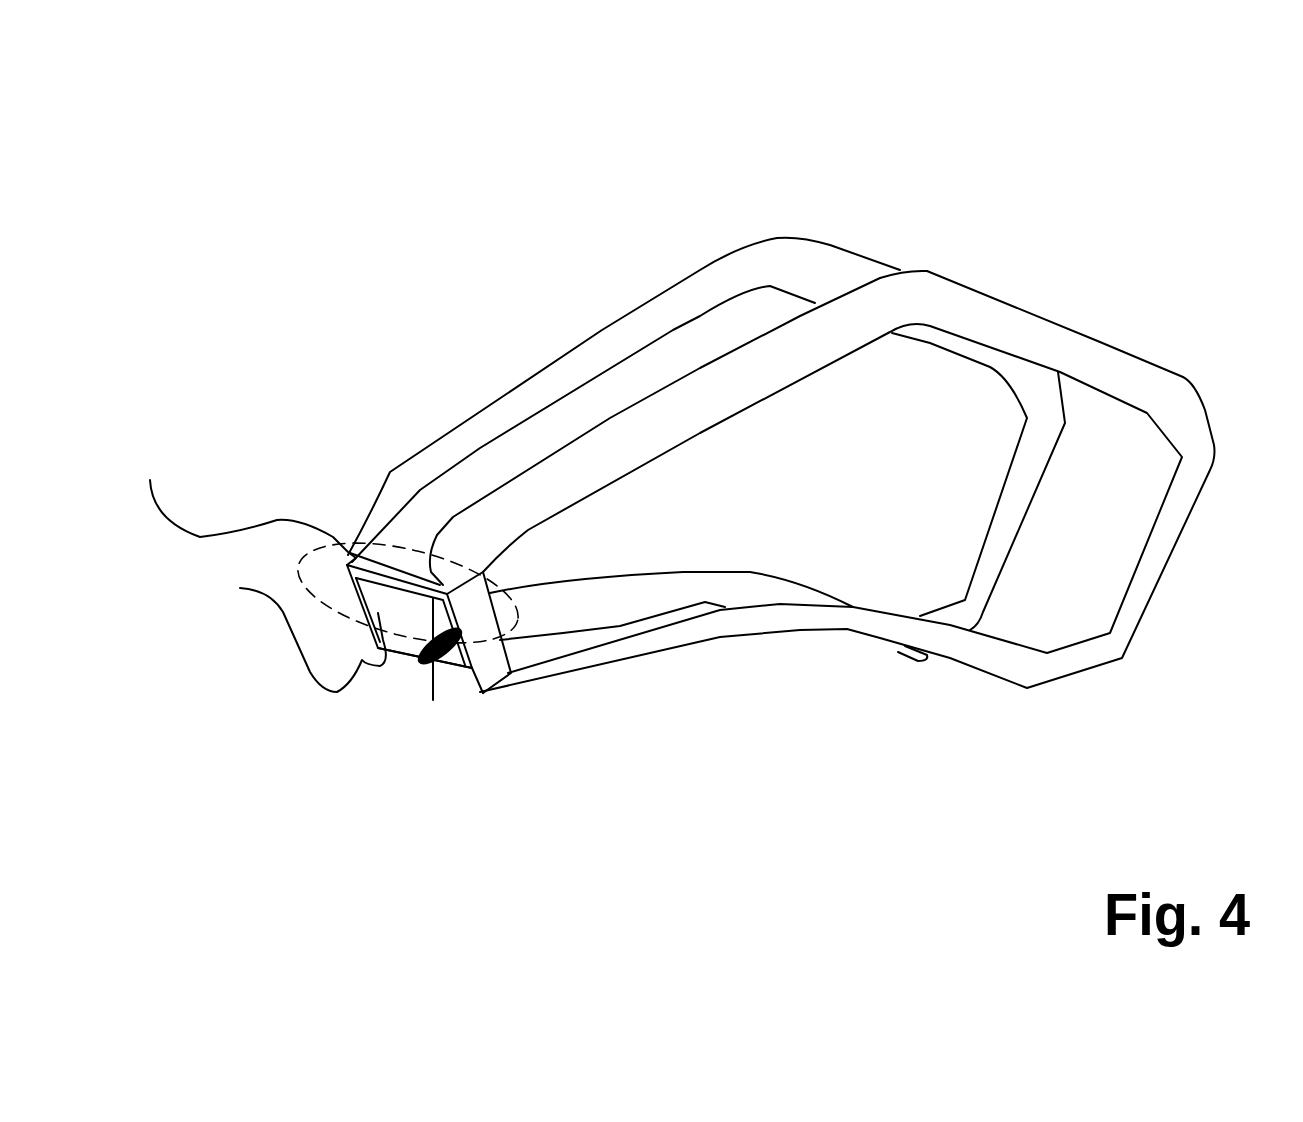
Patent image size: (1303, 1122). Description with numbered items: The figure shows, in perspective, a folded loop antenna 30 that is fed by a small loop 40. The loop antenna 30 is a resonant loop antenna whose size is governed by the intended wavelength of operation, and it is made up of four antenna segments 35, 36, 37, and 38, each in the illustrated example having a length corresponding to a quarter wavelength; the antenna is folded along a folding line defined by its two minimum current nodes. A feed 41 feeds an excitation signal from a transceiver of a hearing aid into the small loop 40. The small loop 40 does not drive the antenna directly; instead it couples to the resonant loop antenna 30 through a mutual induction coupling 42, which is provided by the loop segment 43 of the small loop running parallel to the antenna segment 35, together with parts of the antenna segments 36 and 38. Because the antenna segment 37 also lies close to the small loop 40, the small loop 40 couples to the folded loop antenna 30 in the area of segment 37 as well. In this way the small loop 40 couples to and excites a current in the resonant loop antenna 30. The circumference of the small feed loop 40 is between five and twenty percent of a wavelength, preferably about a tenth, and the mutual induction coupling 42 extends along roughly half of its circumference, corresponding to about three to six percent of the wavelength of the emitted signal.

The loop antenna 30 is at (464, 298).
The antenna segment 35 is at (150, 480).
The antenna segment 36 is at (703, 282).
The antenna segment 37 is at (391, 548).
The antenna segment 38 is at (1033, 303).
The small loop 40 is at (240, 588).
The feed 41 is at (445, 656).
The mutual induction coupling 42 is at (433, 700).
The loop segment 43 is at (495, 632).